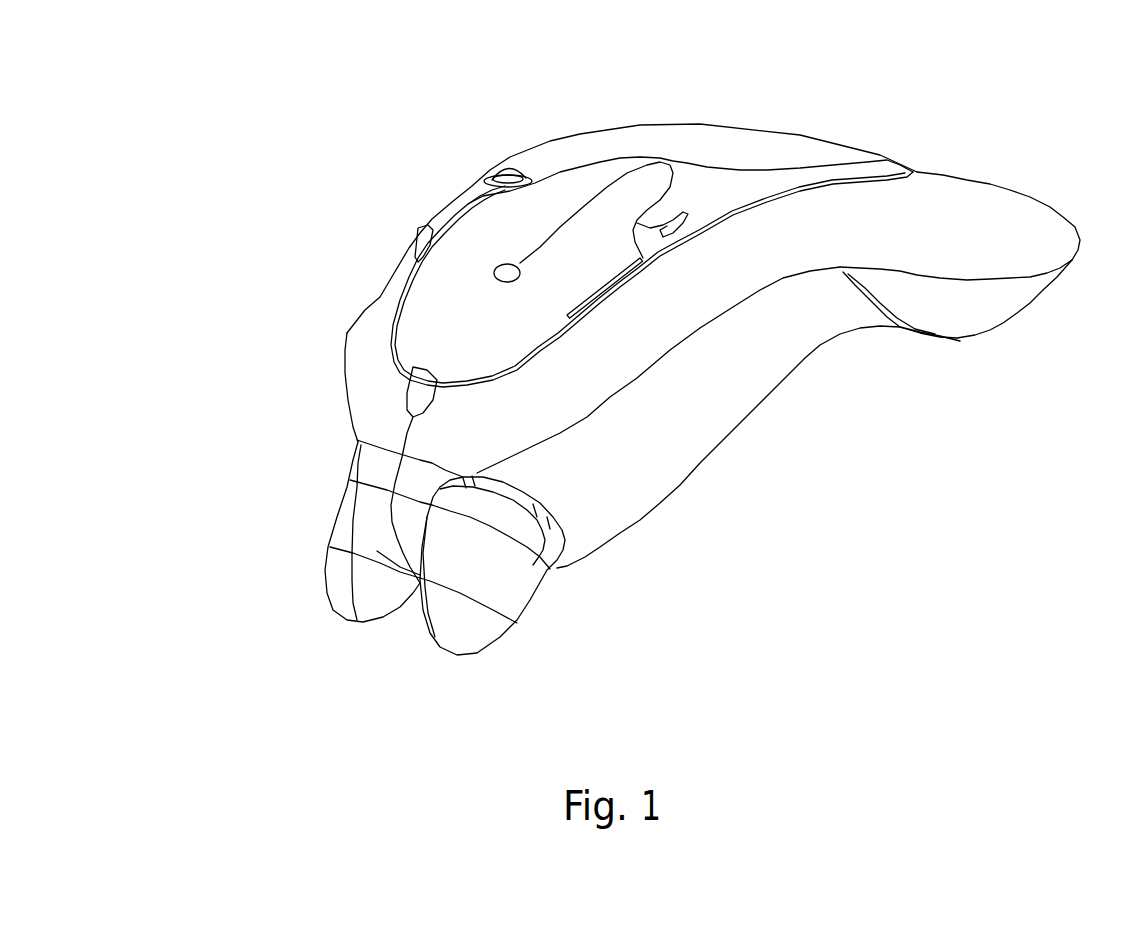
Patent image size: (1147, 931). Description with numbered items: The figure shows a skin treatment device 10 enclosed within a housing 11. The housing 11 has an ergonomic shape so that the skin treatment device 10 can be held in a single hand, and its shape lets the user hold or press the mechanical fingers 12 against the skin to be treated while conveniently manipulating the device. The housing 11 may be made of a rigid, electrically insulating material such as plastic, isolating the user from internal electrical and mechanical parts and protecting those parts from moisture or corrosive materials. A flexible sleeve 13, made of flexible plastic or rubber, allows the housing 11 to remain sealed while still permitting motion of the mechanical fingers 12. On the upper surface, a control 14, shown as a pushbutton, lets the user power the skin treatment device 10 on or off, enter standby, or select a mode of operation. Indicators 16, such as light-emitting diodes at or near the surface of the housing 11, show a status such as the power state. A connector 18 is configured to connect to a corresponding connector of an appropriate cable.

The skin treatment device 10 is at (317, 156).
The housing 11 is at (690, 427).
The mechanical fingers 12 is at (437, 647).
The flexible sleeve 13 is at (335, 510).
The control 14 is at (477, 347).
The indicator 16 is at (410, 398).
The connector 18 is at (985, 180).